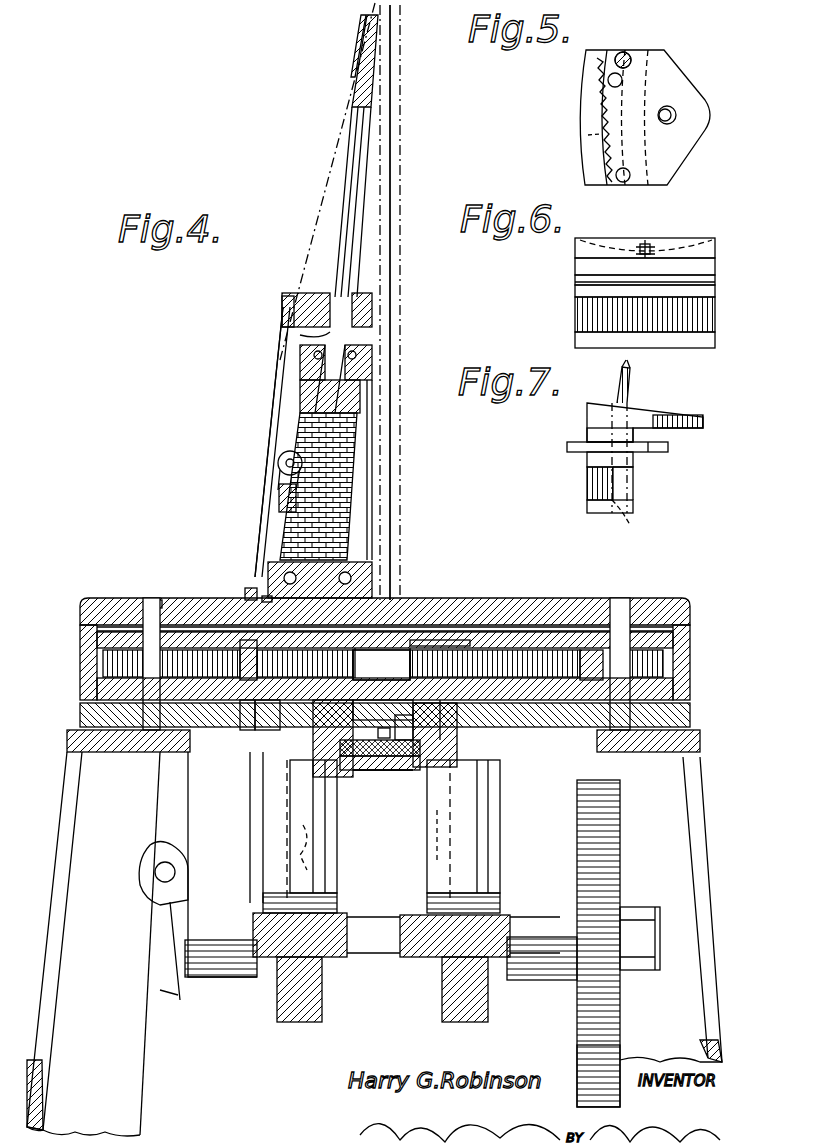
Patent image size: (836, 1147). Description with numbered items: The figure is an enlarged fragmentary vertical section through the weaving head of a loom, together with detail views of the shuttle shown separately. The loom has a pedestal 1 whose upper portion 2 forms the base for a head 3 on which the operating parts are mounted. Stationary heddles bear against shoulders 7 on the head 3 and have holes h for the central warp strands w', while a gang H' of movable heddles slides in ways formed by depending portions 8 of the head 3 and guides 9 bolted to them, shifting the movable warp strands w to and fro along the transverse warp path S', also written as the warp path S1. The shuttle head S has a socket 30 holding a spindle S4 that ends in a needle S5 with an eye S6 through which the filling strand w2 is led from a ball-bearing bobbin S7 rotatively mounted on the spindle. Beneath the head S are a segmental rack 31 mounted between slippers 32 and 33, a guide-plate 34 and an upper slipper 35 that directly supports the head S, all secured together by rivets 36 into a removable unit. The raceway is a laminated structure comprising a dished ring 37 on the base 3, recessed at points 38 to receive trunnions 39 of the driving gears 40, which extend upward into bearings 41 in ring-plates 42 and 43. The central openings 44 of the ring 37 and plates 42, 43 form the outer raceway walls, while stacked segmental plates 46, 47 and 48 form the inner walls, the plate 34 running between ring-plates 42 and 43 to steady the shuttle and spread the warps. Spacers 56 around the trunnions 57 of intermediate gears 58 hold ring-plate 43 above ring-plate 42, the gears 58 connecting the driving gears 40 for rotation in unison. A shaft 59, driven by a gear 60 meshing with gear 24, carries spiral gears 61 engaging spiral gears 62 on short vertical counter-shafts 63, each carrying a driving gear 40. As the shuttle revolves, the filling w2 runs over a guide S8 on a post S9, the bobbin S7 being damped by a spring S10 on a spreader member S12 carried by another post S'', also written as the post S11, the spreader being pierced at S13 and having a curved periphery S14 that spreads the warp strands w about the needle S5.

In FIG. 4, the pedestal 1 is at (64, 778).
In FIG. 4, the upper portion of the pedestal 2 is at (67, 742).
In FIG. 4, the head 3 is at (80, 716).
In FIG. 4, the shoulders 7 is at (404, 725).
In FIG. 4, the depending portions of the head 8 is at (304, 795).
In FIG. 4, the guides 9 is at (314, 815).
In FIG. 4, the gear 24 is at (577, 1056).
In FIG. 4, the socket 30 is at (372, 562).
In FIG. 5, the socket 30 is at (676, 110).
In FIG. 6, the socket 30 is at (652, 242).
In FIG. 7, the socket 30 is at (662, 414).
In FIG. 4, the segmental rack 31 is at (240, 702).
In FIG. 5, the segmental rack 31 is at (586, 136).
In FIG. 6, the segmental rack 31 is at (716, 318).
In FIG. 7, the segmental rack 31 is at (590, 490).
In FIG. 4, the slipper 32 is at (262, 702).
In FIG. 6, the slipper 32 is at (716, 340).
In FIG. 7, the slipper 32 is at (590, 508).
In FIG. 4, the slipper 33 is at (268, 560).
In FIG. 5, the slipper 33 is at (598, 152).
In FIG. 6, the slipper 33 is at (716, 292).
In FIG. 7, the slipper 33 is at (588, 462).
In FIG. 4, the guide-plate 34 is at (158, 600).
In FIG. 5, the guide-plate 34 is at (578, 98).
In FIG. 6, the guide-plate 34 is at (716, 280).
In FIG. 7, the guide-plate 34 is at (567, 448).
In FIG. 4, the slipper 35 is at (252, 588).
In FIG. 6, the slipper 35 is at (716, 264).
In FIG. 7, the slipper 35 is at (586, 438).
In FIG. 5, the rivets 36 is at (612, 74).
In FIG. 6, the rivets 36 is at (630, 226).
In FIG. 7, the rivets 36 is at (628, 390).
In FIG. 4, the dished ring 37 is at (80, 632).
In FIG. 4, the recesses 38 is at (342, 776).
In FIG. 4, the trunnions 39 is at (448, 648).
In FIG. 4, the driving gears 40 is at (186, 702).
In FIG. 4, the bearings 41 is at (430, 640).
In FIG. 4, the ring-plate 42 is at (97, 640).
In FIG. 4, the ring-plate 43 is at (100, 600).
In FIG. 4, the central openings 44 is at (288, 831).
In FIG. 4, the segmental plates 46 is at (383, 715).
In FIG. 4, the segmental plates 47 is at (372, 648).
In FIG. 4, the segmental plates 48 is at (362, 634).
In FIG. 4, the spacers 56 is at (125, 660).
In FIG. 4, the studs 57 is at (148, 728).
In FIG. 4, the intermediate gears 58 is at (135, 660).
In FIG. 4, the shaft 59 is at (676, 896).
In FIG. 4, the gear 60 is at (620, 792).
In FIG. 4, the spiral gears 61 is at (440, 995).
In FIG. 4, the spiral gears 62 is at (410, 914).
In FIG. 4, the counter-shafts 63 is at (322, 830).
In FIG. 4, the shuttle head S is at (401, 622).
In FIG. 5, the shuttle head S is at (645, 112).
In FIG. 6, the shuttle head S is at (667, 243).
In FIG. 7, the shuttle head S is at (620, 457).
In FIG. 4, the warp path S' is at (381, 665).
In FIG. 5, the warp path S' is at (633, 45).
In FIG. 4, the warp path S1 is at (381, 665).
In FIG. 5, the warp path S1 is at (623, 60).
In FIG. 4, the post S'' is at (291, 442).
In FIG. 4, the post S11 is at (269, 442).
In FIG. 4, the spindle S4 is at (356, 238).
In FIG. 4, the needle S5 is at (362, 80).
In FIG. 4, the eye S6 is at (362, 22).
In FIG. 4, the ball-bearing bobbin S7 is at (374, 368).
In FIG. 4, the guide S8 is at (278, 464).
In FIG. 4, the post S9 is at (282, 498).
In FIG. 4, the spring S10 is at (350, 348).
In FIG. 4, the spreader member S12 is at (374, 300).
In FIG. 4, the aperture S13 is at (282, 308).
In FIG. 4, the curved outer periphery S14 is at (284, 298).
In FIG. 4, the movable warp strands w is at (418, 302).
In FIG. 4, the central warp strands w' is at (412, 302).
In FIG. 4, the filling strand w2 is at (336, 150).
In FIG. 4, the gang of heddles H' is at (383, 788).
In FIG. 4, the holes h is at (391, 736).